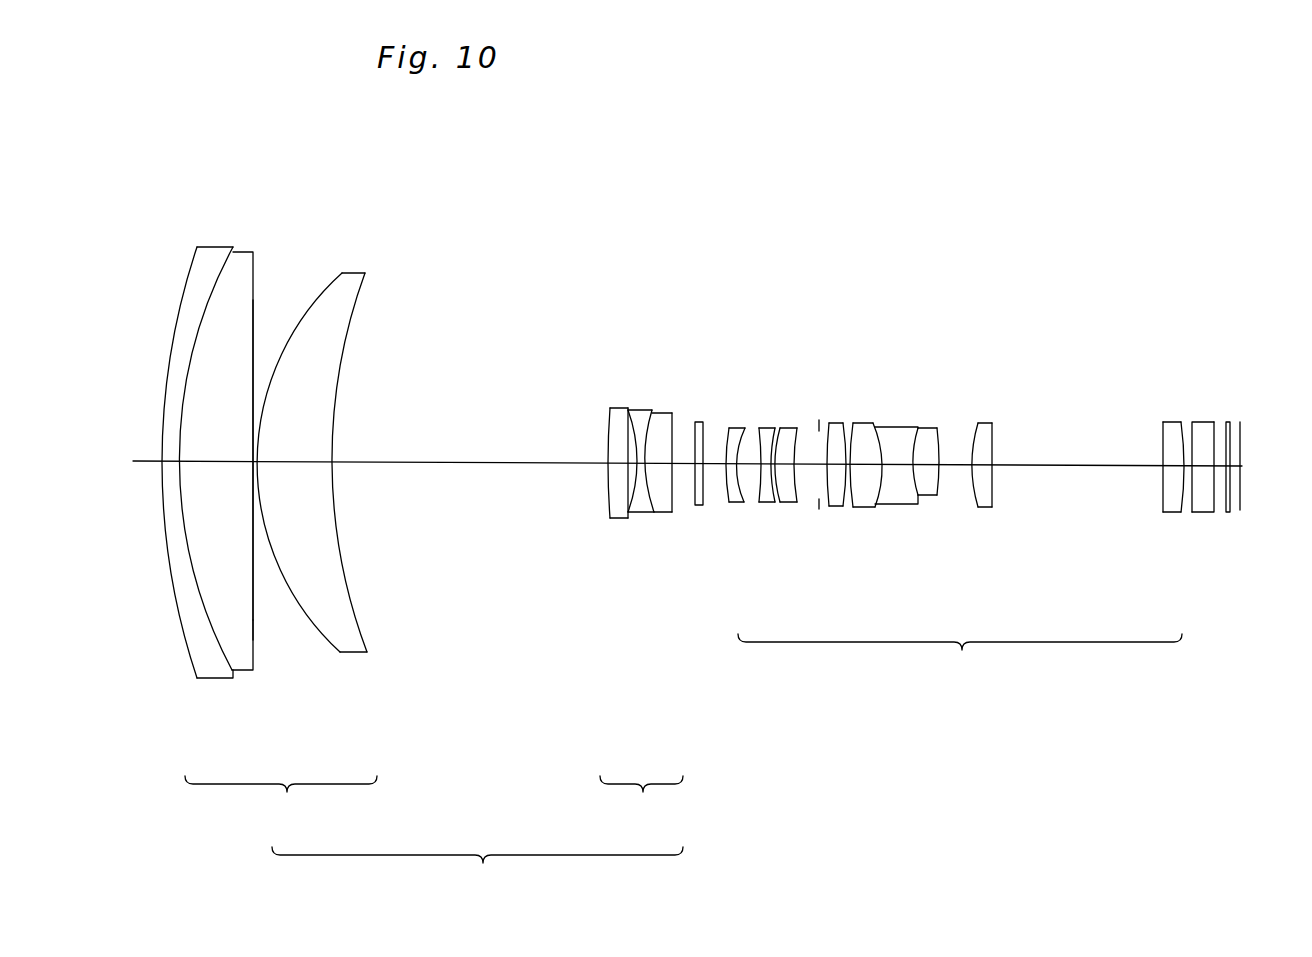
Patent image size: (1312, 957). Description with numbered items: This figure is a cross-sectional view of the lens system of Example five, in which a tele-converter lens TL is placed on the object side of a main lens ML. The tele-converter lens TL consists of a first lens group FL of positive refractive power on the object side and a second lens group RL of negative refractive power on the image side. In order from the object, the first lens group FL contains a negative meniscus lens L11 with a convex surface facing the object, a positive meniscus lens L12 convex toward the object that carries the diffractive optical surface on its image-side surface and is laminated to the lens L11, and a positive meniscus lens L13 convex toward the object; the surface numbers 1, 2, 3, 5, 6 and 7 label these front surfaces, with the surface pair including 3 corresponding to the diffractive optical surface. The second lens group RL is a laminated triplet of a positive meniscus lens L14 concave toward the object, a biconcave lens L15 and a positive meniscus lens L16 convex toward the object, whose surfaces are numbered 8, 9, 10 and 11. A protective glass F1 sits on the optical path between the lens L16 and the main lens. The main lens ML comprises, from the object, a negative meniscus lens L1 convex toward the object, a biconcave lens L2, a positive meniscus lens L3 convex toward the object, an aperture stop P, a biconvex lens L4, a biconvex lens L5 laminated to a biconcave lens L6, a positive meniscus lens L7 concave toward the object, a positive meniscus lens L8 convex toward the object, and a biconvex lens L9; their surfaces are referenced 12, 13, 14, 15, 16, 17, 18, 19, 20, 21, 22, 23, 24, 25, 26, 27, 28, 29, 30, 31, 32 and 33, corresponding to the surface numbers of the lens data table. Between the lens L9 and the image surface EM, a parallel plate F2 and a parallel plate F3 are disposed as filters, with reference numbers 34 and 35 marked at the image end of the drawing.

The lens surface 1 is at (193, 660).
The lens surface 2 is at (228, 657).
The lens surface 3 (diffractive optical surface) 3 is at (255, 668).
The lens surface 5 is at (255, 632).
The lens surface 6 is at (322, 638).
The lens surface 7 is at (363, 623).
The lens surface 8 is at (612, 500).
The lens surface 9 is at (620, 503).
The lens surface 10 is at (660, 503).
The lens surface 11 is at (673, 500).
The lens surface 12 is at (692, 497).
The lens surface 13 is at (705, 497).
The lens surface 14 is at (728, 500).
The lens surface 15 is at (743, 500).
The lens surface 16 is at (760, 500).
The lens surface 17 is at (773, 500).
The lens surface 18 is at (785, 500).
The lens surface 19 is at (797, 500).
The lens surface 20 is at (831, 505).
The lens surface 21 is at (841, 505).
The lens surface 22 is at (855, 505).
The lens surface 23 is at (873, 505).
The lens surface 24 is at (890, 503).
The lens surface 25 is at (912, 503).
The lens surface 26 is at (925, 495).
The lens surface 27 is at (940, 495).
The lens surface 28 is at (978, 505).
The lens surface 29 is at (994, 505).
The lens surface 30 is at (1163, 500).
The lens surface 31 is at (1182, 510).
The lens surface 32 is at (1193, 505).
The lens surface 33 is at (1213, 510).
The filter surface 34 is at (1228, 510).
The image plane surface 35 is at (1242, 505).
The negative meniscus lens L11 is at (201, 458).
The positive meniscus lens L12 is at (279, 471).
The positive meniscus lens L13 is at (330, 460).
The positive meniscus lens L14 is at (609, 474).
The biconcave lens L15 is at (653, 460).
The positive meniscus lens L16 is at (677, 466).
The protective glass F1 is at (704, 466).
The negative meniscus lens L1 is at (730, 483).
The biconcave lens L2 is at (764, 468).
The positive meniscus lens L3 is at (793, 483).
The aperture stop P is at (820, 400).
The biconvex lens L4 is at (831, 483).
The biconvex lens L5 is at (866, 472).
The biconcave lens L6 is at (901, 483).
The positive meniscus lens L7 is at (939, 472).
The positive meniscus lens L8 is at (988, 482).
The biconvex lens L9 is at (1158, 482).
The parallel plate F2 is at (1204, 476).
The parallel plate F3 is at (1236, 470).
The image surface EM is at (1261, 467).
The first lens group FL is at (281, 802).
The second lens group RL is at (641, 802).
The tele-converter lens TL is at (477, 874).
The main lens ML is at (960, 661).